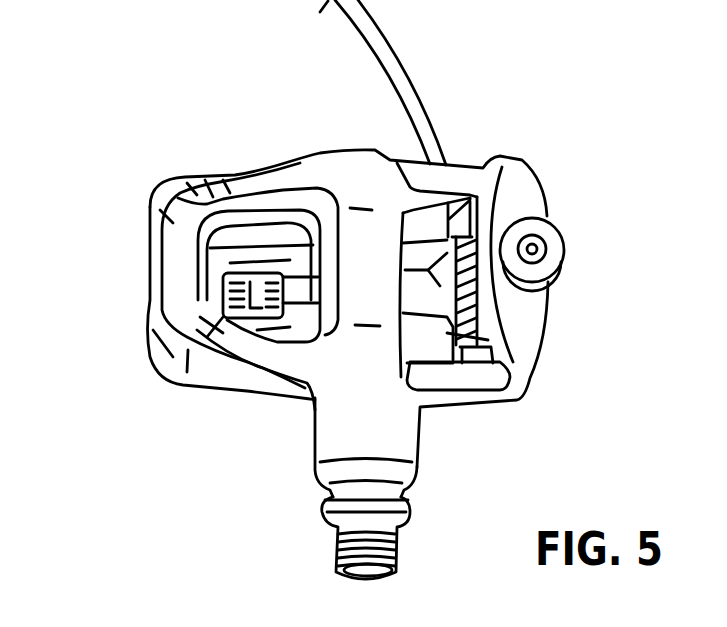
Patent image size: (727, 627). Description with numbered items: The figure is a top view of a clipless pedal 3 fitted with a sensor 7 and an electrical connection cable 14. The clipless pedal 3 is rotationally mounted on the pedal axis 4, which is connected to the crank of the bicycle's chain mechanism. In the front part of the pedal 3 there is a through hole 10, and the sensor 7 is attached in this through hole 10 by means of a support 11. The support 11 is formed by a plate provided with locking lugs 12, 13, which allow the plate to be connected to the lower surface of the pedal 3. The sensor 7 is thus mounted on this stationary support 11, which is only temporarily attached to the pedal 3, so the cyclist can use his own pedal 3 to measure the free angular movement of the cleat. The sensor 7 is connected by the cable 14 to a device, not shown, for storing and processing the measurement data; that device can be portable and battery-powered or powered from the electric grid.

The clipless pedal 3 is at (330, 146).
The pedal axis 4 is at (324, 556).
The sensor 7 is at (224, 264).
The through hole 10 is at (244, 203).
The support 11 is at (193, 287).
The locking lug 12 is at (148, 194).
The locking lug 13 is at (155, 354).
The cable 14 is at (433, 87).